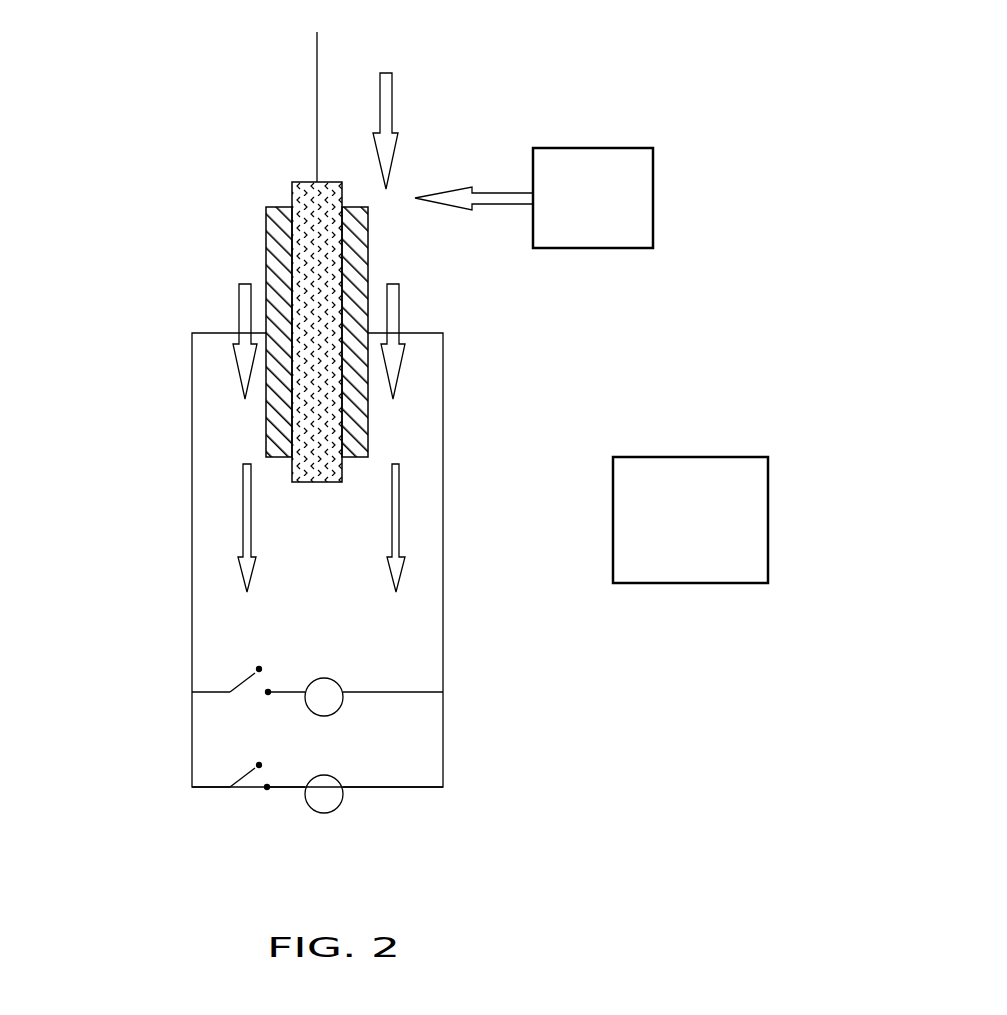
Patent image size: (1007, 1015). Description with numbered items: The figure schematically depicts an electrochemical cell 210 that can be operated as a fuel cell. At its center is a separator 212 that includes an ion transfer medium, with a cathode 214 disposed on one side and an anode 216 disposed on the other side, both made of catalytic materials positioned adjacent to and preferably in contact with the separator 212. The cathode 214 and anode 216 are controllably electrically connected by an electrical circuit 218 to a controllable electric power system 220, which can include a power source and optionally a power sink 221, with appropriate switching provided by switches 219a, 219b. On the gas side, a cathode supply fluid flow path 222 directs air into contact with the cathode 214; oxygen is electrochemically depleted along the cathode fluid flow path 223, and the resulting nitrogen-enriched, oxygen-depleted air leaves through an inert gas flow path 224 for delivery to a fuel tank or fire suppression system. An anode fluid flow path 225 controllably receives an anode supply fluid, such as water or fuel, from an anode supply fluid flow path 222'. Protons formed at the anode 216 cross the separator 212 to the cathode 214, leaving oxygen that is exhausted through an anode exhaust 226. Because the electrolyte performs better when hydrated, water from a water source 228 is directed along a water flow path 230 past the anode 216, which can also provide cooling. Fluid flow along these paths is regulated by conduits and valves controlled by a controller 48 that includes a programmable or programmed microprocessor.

The electrochemical cell 210 is at (617, 76).
The separator 212 is at (322, 241).
The cathode 214 is at (280, 457).
The anode 216 is at (357, 457).
The electrical circuit 218 is at (443, 363).
The switch 219a is at (247, 675).
The switch 219b is at (246, 768).
The electric power system 220 is at (328, 717).
The power sink 221 is at (338, 810).
The cathode supply fluid flow path 222 is at (126, 143).
The anode supply fluid flow path 222' is at (459, 127).
The cathode fluid flow path 223 is at (239, 305).
The inert gas flow path 224 is at (243, 518).
The anode fluid flow path 225 is at (399, 319).
The anode exhaust 226 is at (399, 533).
The water source 228 is at (607, 248).
The water flow path 230 is at (506, 192).
The controller 48 is at (720, 583).